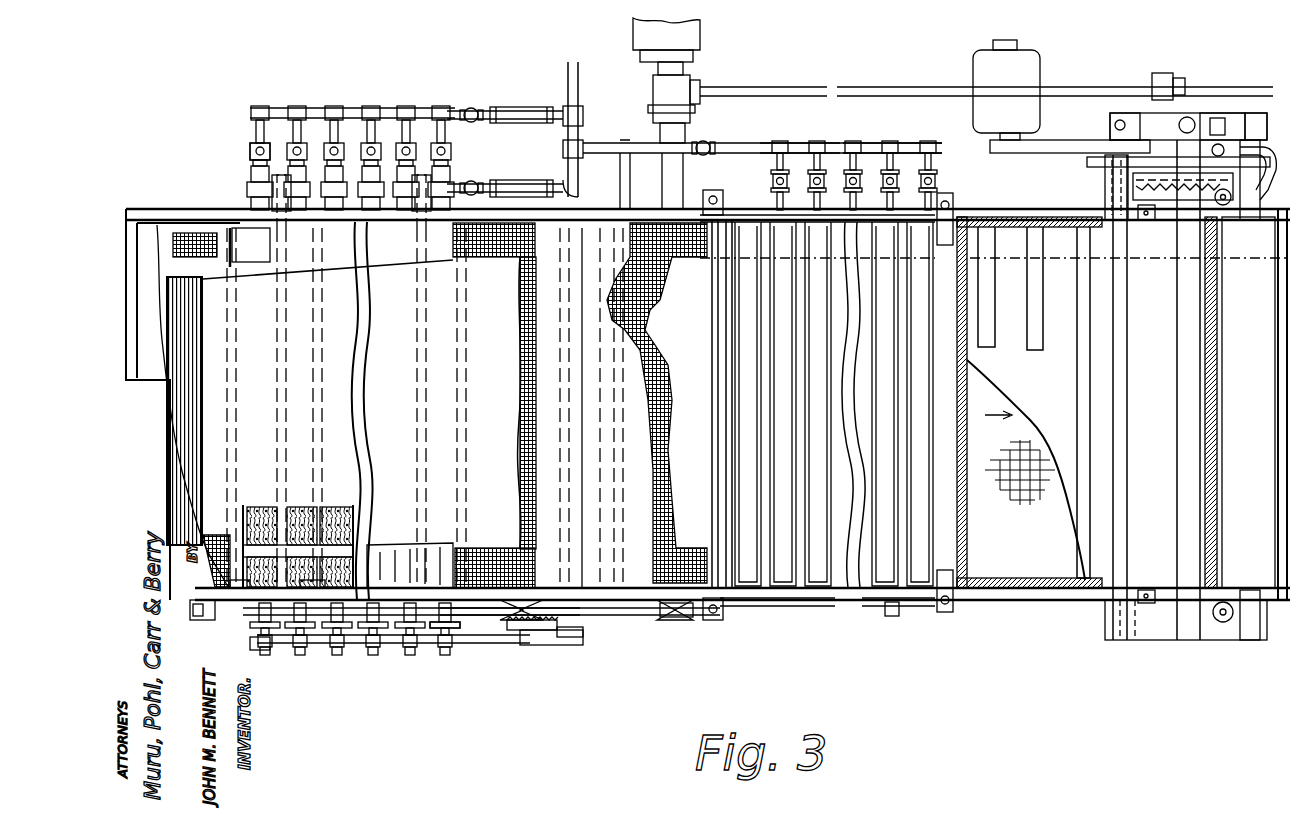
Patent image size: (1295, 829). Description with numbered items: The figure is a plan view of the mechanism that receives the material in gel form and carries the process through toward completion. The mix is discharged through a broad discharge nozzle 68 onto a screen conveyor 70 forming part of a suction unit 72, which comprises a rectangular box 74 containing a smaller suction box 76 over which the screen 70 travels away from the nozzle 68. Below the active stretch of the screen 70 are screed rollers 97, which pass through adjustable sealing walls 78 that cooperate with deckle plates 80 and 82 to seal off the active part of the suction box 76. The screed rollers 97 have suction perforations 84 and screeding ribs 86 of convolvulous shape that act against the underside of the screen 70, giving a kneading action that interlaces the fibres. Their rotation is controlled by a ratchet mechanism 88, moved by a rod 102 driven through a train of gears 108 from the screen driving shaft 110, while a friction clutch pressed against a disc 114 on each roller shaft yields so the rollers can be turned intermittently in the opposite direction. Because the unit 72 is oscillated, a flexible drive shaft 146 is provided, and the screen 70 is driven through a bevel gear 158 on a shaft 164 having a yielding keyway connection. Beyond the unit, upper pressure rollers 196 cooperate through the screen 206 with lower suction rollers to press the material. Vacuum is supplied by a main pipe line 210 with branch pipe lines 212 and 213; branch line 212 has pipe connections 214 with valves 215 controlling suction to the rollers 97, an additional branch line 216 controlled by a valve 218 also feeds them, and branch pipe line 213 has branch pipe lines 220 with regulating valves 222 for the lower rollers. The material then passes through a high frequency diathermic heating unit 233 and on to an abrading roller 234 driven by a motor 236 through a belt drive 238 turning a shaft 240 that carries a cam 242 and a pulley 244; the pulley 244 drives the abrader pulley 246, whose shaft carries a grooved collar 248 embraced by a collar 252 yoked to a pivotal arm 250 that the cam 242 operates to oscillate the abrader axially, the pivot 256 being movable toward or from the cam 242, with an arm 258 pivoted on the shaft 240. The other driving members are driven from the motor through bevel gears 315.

The discharge nozzle 68 is at (170, 388).
The screen conveyor 70 is at (490, 545).
The suction unit 72 is at (220, 166).
The rectangular box 74 is at (157, 208).
The suction box 76 is at (232, 480).
The adjustable sealing walls 78 is at (302, 507).
The deckle plate 80 is at (405, 555).
The deckle plate 82 is at (240, 274).
The suction perforations 84 is at (270, 550).
The screeding ribs 86 is at (295, 604).
The ratchet mechanism 88 is at (422, 648).
The screed rollers 97 is at (268, 445).
The rod 102 is at (352, 648).
The train of gears 108 is at (588, 650).
The screen driving shaft 110 is at (530, 632).
The disc 114 is at (455, 630).
The flexible drive shaft 146 is at (610, 615).
The bevel gear 158 is at (205, 620).
The shaft 164 is at (238, 604).
The upper pressure rollers 196 is at (770, 620).
The screen 206 is at (660, 372).
The main pipe line 210 is at (572, 62).
The branch pipe line 212 is at (513, 110).
The branch pipe line 213 is at (795, 142).
The pipe connections 214 is at (250, 118).
The valves 215 is at (252, 150).
The additional branch line 216 is at (540, 163).
The valve 218 is at (472, 180).
The branch pipe lines 220 is at (820, 165).
The regulating valves 222 is at (903, 182).
The high frequency diathermic heating unit 233 is at (1027, 565).
The abrading roller 234 is at (1265, 645).
The motor 236 is at (1035, 52).
The belt drive 238 is at (1043, 140).
The shaft 240 is at (1132, 115).
The cam 242 is at (1112, 120).
The pulley 244 is at (1085, 160).
The abrader pulley 246 is at (1213, 145).
The grooved collar 248 is at (1262, 115).
The pivotal arm 250 is at (1208, 113).
The collar 252 is at (1285, 110).
The pivot 256 is at (1190, 115).
The arm 258 is at (1103, 184).
The bevel gear 315 is at (700, 88).